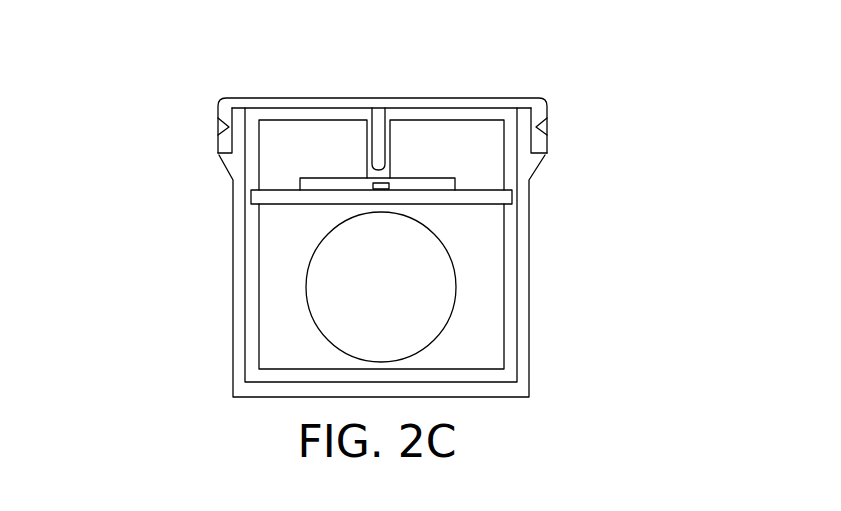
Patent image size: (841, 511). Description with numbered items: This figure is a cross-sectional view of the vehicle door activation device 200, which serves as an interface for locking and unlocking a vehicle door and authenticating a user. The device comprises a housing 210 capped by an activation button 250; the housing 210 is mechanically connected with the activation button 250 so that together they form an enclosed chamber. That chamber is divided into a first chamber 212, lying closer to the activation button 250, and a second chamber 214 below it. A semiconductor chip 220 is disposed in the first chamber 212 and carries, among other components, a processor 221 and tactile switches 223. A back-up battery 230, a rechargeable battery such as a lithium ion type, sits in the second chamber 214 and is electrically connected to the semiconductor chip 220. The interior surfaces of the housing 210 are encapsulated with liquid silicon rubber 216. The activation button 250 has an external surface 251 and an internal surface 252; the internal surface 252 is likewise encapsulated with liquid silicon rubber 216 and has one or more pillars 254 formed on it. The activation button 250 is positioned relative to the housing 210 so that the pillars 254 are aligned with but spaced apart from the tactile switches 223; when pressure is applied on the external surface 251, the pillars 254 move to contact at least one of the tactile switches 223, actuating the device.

The vehicle door activation device 200 is at (596, 122).
The housing 210 is at (233, 330).
The first chamber 212 is at (381, 155).
The second chamber 214 is at (381, 286).
The liquid silicon rubber 216 is at (240, 275).
The semiconductor chip 220 is at (278, 205).
The processor 221 is at (318, 178).
The tactile switches 223 is at (390, 189).
The back-up battery 230 is at (400, 298).
The activation button 250 is at (255, 97).
The external surface 251 is at (420, 97).
The internal surface 252 is at (431, 112).
The pillars 254 is at (372, 143).